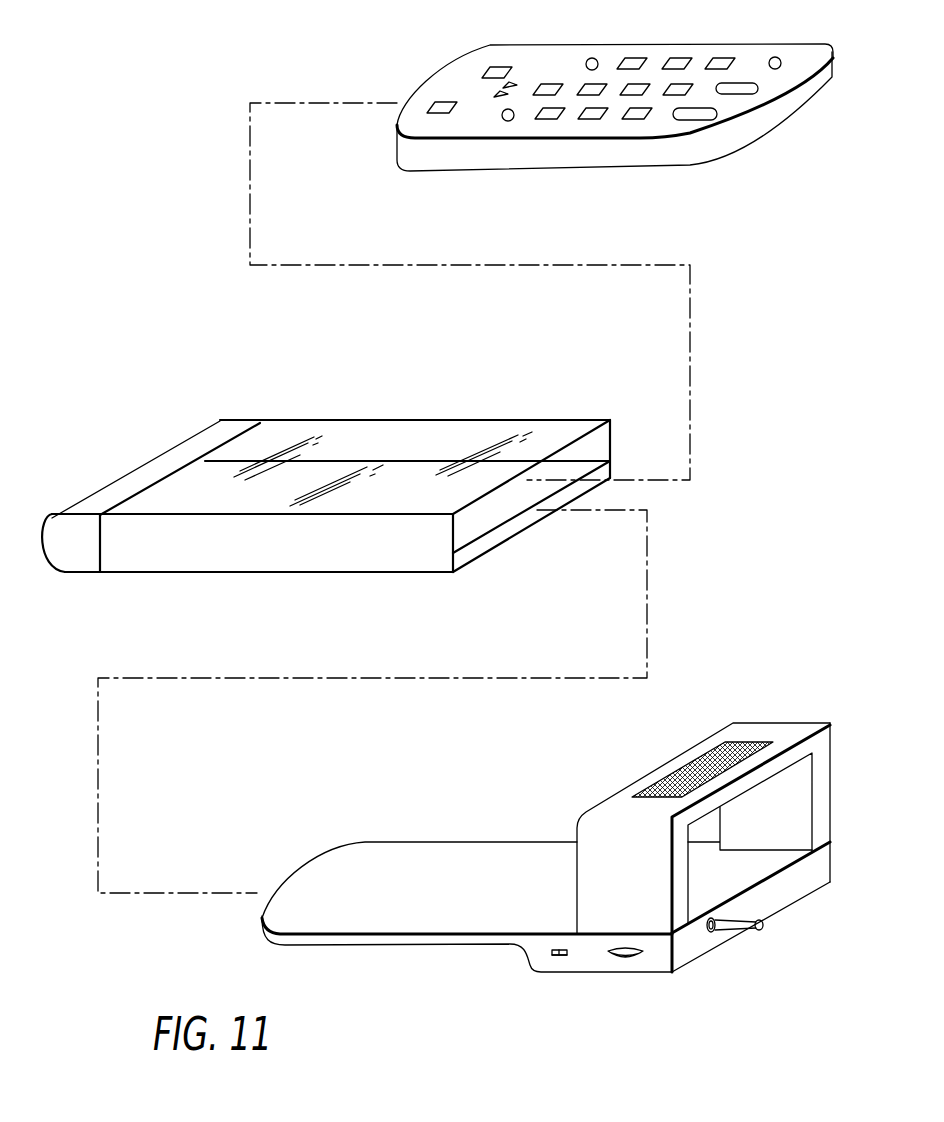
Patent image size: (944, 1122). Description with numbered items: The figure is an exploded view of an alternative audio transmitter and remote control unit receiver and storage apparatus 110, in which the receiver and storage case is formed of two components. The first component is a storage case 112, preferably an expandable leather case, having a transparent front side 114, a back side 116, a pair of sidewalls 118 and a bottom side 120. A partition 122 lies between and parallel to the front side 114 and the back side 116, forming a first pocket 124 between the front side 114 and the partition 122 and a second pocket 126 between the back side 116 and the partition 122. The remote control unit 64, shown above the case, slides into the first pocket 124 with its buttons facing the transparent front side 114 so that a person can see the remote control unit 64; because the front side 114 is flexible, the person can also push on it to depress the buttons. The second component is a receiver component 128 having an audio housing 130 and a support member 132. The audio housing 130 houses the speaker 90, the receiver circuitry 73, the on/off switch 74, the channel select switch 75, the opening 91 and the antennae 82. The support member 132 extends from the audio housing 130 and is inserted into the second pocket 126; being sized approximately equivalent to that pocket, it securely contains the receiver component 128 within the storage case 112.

The audio transmitter and remote control unit receiver and storage apparatus 110 is at (101, 149).
The remote control unit 64 is at (620, 58).
The storage case 112 is at (339, 500).
The transparent front side 114 is at (573, 427).
The back side 116 is at (467, 567).
The sidewalls 118 is at (393, 435).
The bottom side 120 is at (43, 533).
The partition 122 is at (600, 477).
The first pocket 124 is at (545, 472).
The second pocket 126 is at (520, 518).
The receiver component 128 is at (447, 886).
The audio housing 130 is at (683, 847).
The support member 132 is at (290, 917).
The speaker 90 is at (703, 760).
The opening 91 is at (802, 828).
The antennae 82 is at (732, 924).
The on/off switch 74 is at (617, 958).
The channel select switch 75 is at (553, 956).
The receiver circuitry 73 is at (560, 960).